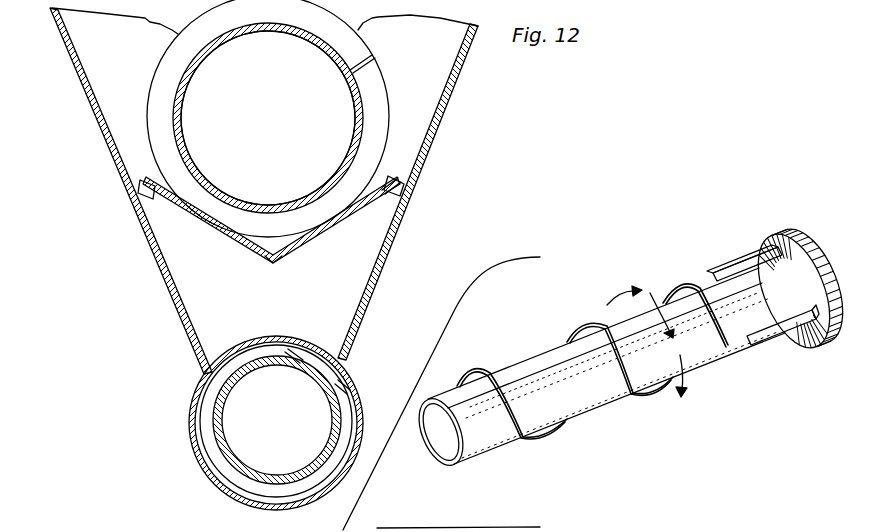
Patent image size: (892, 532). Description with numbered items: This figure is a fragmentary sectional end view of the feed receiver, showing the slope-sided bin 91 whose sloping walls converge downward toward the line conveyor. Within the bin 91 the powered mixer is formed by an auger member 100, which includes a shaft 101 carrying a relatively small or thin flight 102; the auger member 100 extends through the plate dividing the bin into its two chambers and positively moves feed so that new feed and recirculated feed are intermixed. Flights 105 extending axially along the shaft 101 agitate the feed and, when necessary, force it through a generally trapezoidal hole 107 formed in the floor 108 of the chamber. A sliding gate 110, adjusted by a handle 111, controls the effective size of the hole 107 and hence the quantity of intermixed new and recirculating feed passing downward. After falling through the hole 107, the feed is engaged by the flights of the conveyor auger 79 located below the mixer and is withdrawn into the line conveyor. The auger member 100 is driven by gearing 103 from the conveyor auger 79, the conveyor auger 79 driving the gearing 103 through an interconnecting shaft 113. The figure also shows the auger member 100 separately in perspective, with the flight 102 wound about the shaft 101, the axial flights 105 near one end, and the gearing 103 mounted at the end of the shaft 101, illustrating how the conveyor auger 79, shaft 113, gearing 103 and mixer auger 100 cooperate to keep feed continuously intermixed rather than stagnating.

The conveyor auger 79 is at (345, 380).
The slope-sided bin 91 is at (100, 118).
The auger member 100 is at (374, 123).
The shaft 101 is at (277, 116).
The flight 102 is at (377, 97).
The gearing 103 is at (859, 215).
The flights 105 is at (747, 227).
The trapezoidal hole 107 is at (380, 175).
The floor 108 is at (402, 193).
The sliding gate 110 is at (230, 240).
The handle 111 is at (282, 245).
The interconnecting shaft 113 is at (327, 320).